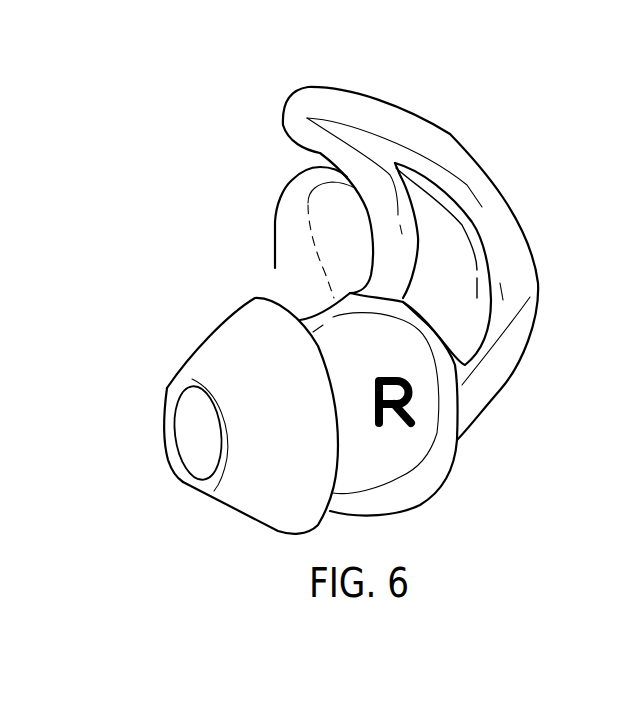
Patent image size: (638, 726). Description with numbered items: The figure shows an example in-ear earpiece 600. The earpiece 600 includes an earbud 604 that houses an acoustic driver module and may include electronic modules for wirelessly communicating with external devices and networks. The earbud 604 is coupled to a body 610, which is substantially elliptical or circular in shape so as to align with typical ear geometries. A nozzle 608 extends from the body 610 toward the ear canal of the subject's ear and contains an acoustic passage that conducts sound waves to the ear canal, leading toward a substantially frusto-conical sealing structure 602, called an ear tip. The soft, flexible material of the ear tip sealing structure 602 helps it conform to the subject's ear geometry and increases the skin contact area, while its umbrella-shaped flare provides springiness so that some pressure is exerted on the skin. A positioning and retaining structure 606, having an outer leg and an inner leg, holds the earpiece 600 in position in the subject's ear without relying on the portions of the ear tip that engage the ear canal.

The in-ear earpiece 600 is at (158, 100).
The sealing structure 602 is at (238, 337).
The earbud 604 is at (318, 197).
The positioning and retaining structure 606 is at (367, 136).
The nozzle 608 is at (191, 442).
The body 610 is at (403, 490).